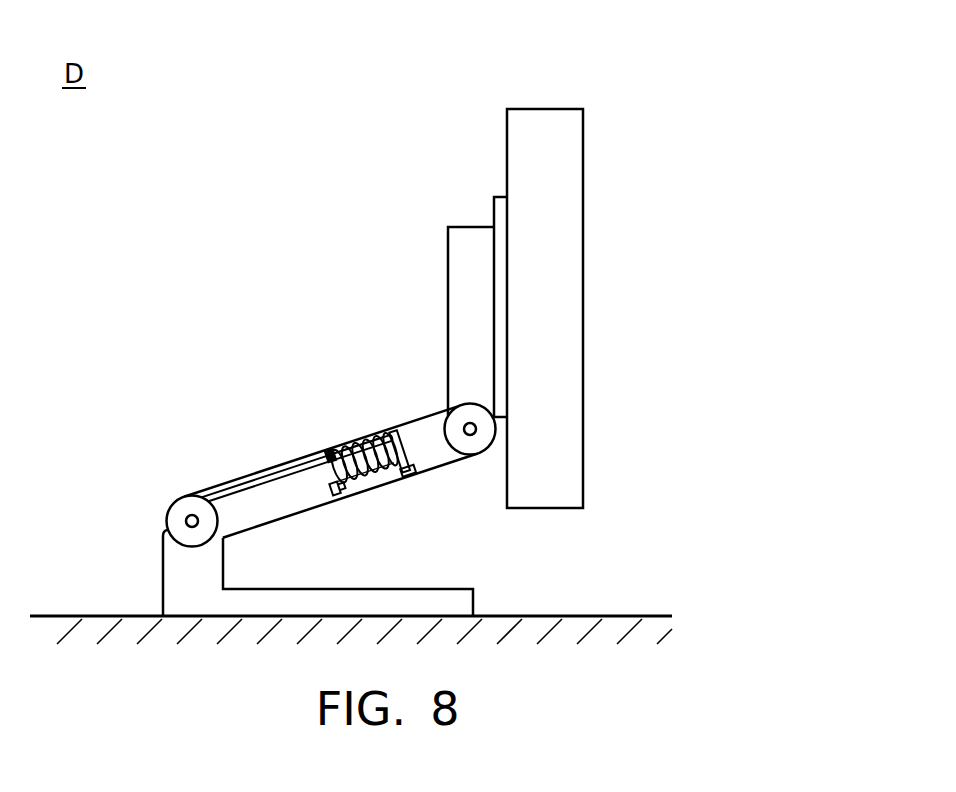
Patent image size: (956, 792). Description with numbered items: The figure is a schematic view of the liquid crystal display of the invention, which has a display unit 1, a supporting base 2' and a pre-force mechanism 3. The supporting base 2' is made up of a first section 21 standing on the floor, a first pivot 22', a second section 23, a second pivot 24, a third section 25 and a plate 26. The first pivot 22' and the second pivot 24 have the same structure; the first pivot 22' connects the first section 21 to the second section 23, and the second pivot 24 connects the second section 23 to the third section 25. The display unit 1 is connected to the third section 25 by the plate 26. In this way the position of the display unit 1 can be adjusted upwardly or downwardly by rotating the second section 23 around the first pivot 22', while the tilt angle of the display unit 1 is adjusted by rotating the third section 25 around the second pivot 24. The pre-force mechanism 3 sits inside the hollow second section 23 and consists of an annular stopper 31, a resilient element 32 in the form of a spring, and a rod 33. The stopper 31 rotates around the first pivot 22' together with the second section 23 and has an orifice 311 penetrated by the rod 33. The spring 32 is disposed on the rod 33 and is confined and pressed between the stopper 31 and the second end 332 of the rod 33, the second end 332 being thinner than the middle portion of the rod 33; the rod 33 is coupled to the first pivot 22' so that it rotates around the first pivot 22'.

The display unit 1 is at (583, 308).
The supporting base 2' is at (290, 454).
The pre-force mechanism 3 is at (315, 454).
The first section 21 is at (172, 576).
The first pivot 22' is at (151, 521).
The second section 23 is at (293, 513).
The second pivot 24 is at (483, 456).
The third section 25 is at (447, 280).
The plate 26 is at (497, 196).
The annular stopper 31 is at (364, 457).
The resilient element 32 is at (399, 451).
The rod 33 is at (290, 469).
The orifice 311 is at (337, 488).
The second end 332 is at (408, 471).